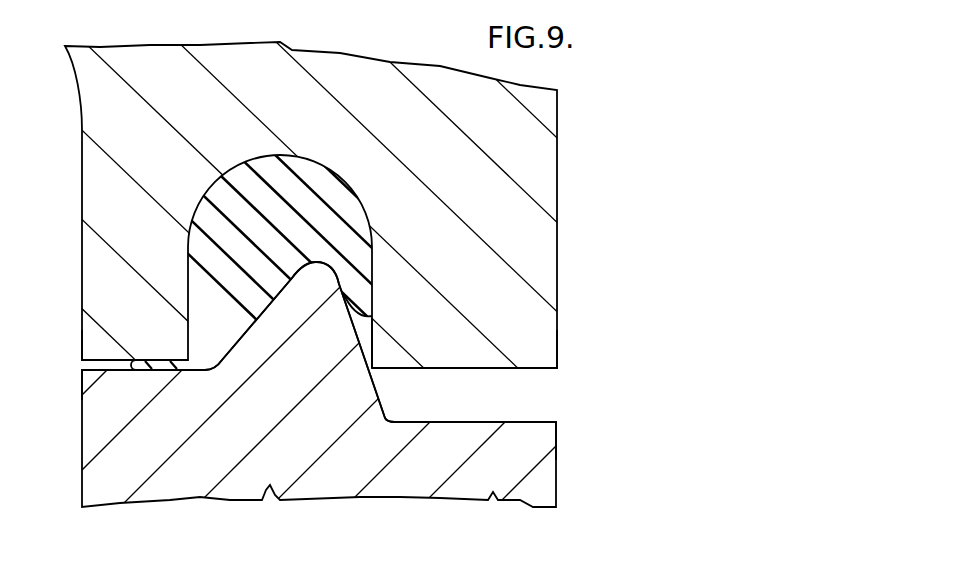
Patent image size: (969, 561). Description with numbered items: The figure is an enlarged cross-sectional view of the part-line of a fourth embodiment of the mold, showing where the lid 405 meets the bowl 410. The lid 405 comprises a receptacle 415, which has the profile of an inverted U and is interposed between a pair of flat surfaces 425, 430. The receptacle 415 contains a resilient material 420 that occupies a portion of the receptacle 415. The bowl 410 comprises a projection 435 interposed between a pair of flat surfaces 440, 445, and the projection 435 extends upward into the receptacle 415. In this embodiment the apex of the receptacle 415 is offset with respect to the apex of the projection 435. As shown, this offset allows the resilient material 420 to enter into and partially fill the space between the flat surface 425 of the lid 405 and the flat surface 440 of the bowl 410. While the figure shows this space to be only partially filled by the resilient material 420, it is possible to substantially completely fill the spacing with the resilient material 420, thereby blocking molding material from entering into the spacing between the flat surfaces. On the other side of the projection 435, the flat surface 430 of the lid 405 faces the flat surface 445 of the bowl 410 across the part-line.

The lid 405 is at (546, 136).
The bowl 410 is at (546, 464).
The receptacle 415 is at (374, 343).
The resilient material 420 is at (342, 184).
The flat surface 425 is at (102, 356).
The flat surface 430 is at (534, 371).
The projection 435 is at (308, 293).
The flat surface 440 is at (84, 369).
The flat surface 445 is at (492, 421).